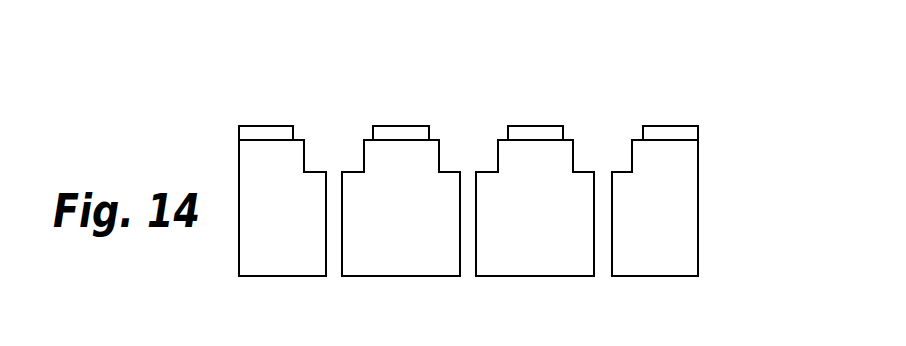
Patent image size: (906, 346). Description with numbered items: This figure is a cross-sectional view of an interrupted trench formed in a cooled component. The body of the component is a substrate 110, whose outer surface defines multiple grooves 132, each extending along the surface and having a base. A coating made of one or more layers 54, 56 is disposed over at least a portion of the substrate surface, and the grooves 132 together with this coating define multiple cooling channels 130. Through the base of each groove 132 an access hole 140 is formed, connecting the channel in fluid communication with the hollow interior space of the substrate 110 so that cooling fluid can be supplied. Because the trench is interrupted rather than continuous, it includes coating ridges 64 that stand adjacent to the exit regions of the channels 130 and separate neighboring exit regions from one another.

The substrate 110 is at (678, 207).
The coating ridge 64 is at (382, 126).
The layer of coating 54 is at (678, 132).
The layer of coating 56 is at (678, 132).
The channel 130 is at (337, 157).
The groove 132 is at (337, 157).
The access hole 140 is at (333, 223).